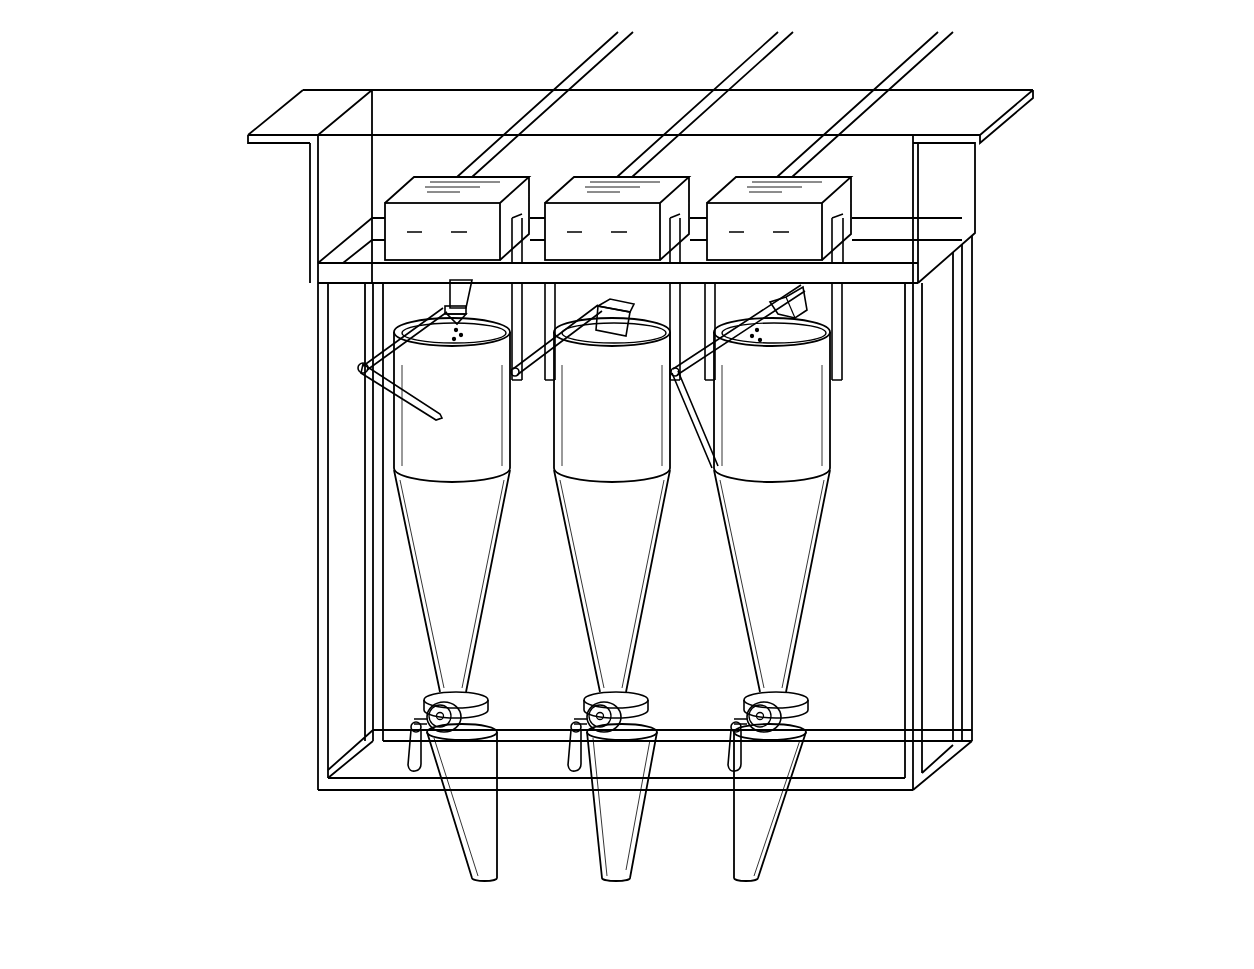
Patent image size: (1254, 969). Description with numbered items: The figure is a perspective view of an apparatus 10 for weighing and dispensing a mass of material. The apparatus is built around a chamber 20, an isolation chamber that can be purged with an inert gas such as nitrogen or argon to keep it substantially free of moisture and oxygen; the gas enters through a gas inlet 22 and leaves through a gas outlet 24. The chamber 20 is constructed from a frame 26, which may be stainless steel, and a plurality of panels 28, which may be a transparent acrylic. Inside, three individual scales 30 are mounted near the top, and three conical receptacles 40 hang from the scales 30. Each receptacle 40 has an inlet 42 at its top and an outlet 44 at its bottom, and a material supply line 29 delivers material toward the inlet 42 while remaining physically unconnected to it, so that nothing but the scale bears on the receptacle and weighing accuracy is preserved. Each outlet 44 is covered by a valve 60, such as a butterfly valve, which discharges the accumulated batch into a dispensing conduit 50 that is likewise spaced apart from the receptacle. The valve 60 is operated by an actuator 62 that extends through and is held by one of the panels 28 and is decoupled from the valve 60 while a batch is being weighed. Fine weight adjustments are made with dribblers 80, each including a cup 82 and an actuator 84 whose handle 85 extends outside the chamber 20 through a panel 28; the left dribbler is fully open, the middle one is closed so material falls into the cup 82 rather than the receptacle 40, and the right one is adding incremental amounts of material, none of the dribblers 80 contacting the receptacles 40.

The apparatus 10 is at (287, 683).
The chamber 20 is at (976, 357).
The gas inlet 22 is at (335, 277).
The gas outlet 24 is at (938, 715).
The frame 26 is at (322, 527).
The panels 28 is at (348, 612).
The material supply line 29 is at (573, 79).
The scales 30 is at (618, 218).
The receptacles 40 is at (415, 527).
The inlet 42 is at (810, 326).
The outlet 44 is at (804, 688).
The dispensing conduits 50 is at (468, 842).
The valve 60 is at (818, 703).
The actuator 62 is at (738, 702).
The dribblers 80 is at (604, 340).
The cup 82 is at (450, 297).
The actuator 84 is at (410, 360).
The handle 85 is at (363, 370).